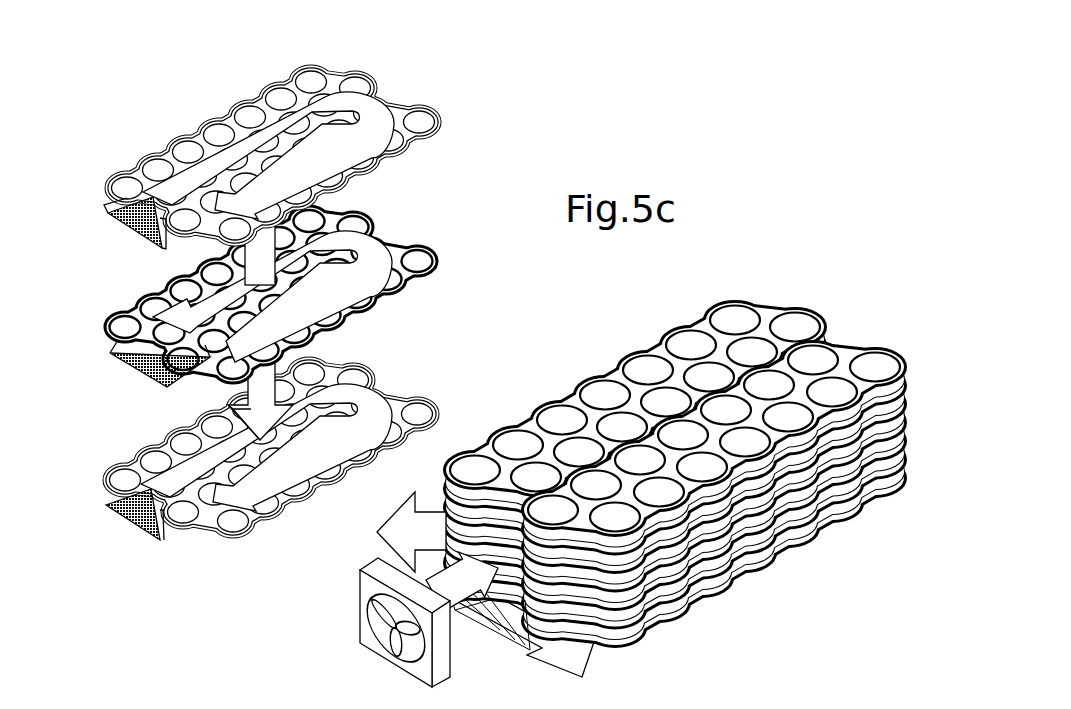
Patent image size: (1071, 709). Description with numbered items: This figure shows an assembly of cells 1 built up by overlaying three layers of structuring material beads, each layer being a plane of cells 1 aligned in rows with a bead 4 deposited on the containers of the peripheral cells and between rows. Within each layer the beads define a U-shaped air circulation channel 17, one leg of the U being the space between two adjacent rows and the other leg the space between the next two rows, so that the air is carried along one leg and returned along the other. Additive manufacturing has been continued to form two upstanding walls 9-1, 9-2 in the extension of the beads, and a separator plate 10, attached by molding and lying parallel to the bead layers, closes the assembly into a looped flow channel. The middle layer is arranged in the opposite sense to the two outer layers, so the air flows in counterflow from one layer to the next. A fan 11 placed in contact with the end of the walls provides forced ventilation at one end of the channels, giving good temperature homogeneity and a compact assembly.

The cells 1 is at (420, 118).
The structuring material bead 4 is at (412, 140).
The air circulation channel 17 is at (380, 118).
The upstanding wall 9-1 is at (186, 246).
The upstanding wall 9-2 is at (110, 202).
The separator plate 10 is at (158, 247).
The fan 11 is at (360, 607).